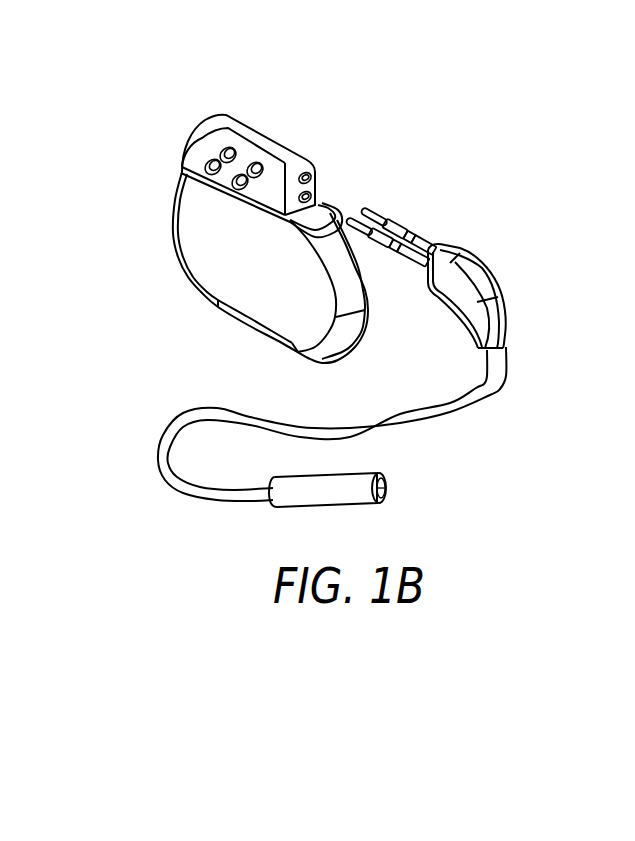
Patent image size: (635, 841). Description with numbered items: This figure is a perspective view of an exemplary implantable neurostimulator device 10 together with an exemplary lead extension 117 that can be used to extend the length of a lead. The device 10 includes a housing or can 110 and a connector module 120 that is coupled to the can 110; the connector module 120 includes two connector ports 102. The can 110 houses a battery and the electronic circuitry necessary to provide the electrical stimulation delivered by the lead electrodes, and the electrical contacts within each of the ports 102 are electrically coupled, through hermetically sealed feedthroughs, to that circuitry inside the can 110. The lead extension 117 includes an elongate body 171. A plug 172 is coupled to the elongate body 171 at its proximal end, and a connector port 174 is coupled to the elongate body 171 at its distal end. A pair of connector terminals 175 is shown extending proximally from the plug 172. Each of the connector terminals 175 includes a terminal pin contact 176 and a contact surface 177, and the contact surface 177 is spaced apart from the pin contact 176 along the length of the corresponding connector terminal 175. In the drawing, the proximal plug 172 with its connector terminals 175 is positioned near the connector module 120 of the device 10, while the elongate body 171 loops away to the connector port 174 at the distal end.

The device 10 is at (159, 132).
The housing or can 110 is at (195, 253).
The connector module 120 is at (268, 148).
The connector ports 102 is at (313, 196).
The lead extension 117 is at (548, 387).
The elongate body 171 is at (430, 418).
The plug 172 is at (476, 272).
The connector port 174 is at (385, 493).
The connector terminals 175 is at (419, 243).
The terminal pin contact 176 is at (366, 210).
The contact surface 177 is at (400, 229).